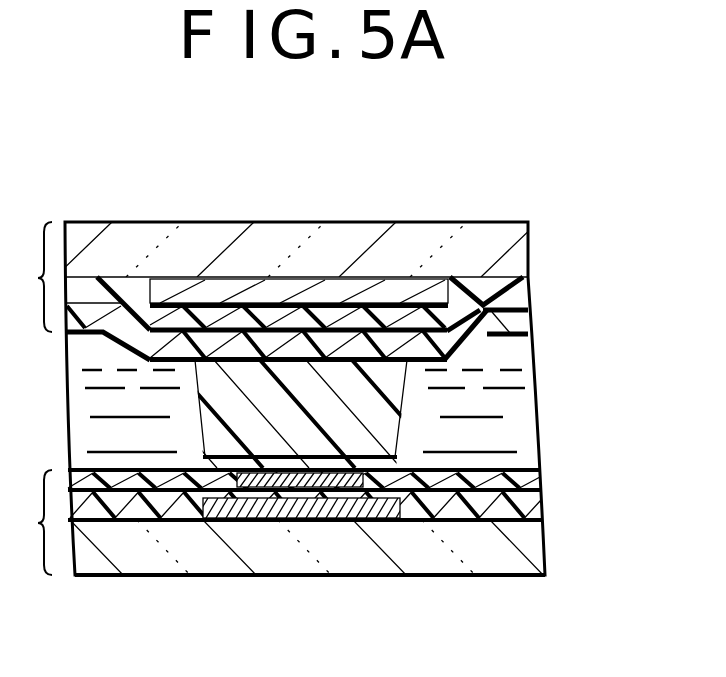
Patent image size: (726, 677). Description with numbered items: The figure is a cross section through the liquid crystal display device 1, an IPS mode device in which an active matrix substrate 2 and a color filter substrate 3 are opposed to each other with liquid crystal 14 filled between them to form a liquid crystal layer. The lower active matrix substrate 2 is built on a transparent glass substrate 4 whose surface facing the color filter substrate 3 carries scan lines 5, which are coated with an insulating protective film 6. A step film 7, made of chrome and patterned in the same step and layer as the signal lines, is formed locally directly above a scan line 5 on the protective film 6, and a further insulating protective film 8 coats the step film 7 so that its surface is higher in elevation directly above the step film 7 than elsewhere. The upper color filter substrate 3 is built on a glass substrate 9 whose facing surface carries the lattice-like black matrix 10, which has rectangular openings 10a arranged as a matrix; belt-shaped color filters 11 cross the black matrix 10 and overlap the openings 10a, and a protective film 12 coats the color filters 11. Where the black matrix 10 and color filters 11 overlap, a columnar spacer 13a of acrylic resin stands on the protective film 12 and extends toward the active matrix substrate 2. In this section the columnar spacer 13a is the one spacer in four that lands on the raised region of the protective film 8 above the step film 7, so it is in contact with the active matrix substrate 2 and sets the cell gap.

The liquid crystal display device 1 is at (554, 190).
The active matrix substrate 2 is at (33, 522).
The color filter substrate 3 is at (33, 277).
The glass substrate 4 is at (508, 550).
The scan lines 5 is at (232, 520).
The insulating protective film 6 is at (513, 508).
The step film 7 is at (334, 488).
The insulating protective film 8 is at (513, 480).
The glass substrate 9 is at (88, 247).
The black matrix 10 is at (214, 285).
The openings 10a is at (148, 300).
The color filters 11 is at (279, 318).
The protective film 12 is at (338, 348).
The columnar spacer 13a is at (387, 380).
The liquid crystal 14 is at (538, 394).